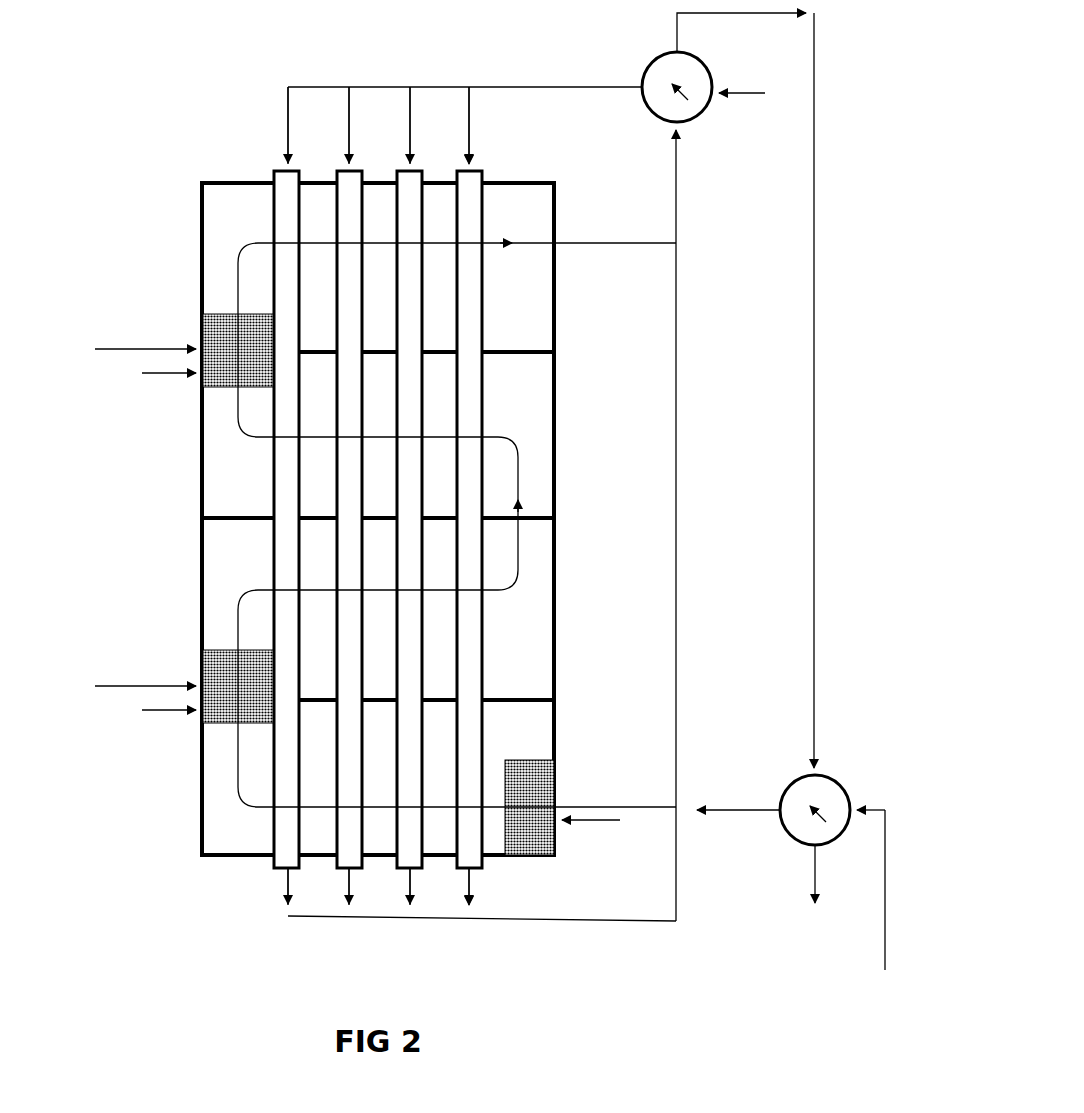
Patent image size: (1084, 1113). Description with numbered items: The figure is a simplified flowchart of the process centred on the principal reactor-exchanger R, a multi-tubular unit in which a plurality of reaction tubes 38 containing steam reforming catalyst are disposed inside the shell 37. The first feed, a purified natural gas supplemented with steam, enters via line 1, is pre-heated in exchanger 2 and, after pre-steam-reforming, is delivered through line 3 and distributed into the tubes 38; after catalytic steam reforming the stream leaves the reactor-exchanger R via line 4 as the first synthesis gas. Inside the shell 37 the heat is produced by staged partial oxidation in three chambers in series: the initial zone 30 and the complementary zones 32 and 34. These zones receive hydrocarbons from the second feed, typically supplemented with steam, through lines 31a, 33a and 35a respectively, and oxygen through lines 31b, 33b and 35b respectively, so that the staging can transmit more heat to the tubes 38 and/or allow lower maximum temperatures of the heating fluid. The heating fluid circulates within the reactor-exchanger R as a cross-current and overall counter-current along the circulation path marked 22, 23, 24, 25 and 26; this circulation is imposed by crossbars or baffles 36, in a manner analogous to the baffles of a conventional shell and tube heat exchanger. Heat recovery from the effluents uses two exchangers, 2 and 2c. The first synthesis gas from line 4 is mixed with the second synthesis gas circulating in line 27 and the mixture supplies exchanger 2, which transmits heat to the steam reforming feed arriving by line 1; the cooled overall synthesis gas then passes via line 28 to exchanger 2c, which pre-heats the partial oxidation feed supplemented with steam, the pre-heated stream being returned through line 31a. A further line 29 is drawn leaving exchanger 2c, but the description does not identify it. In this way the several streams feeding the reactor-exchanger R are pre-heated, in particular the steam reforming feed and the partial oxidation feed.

The reactor-exchanger R is at (210, 94).
The line 1 is at (745, 95).
The exchanger 2 is at (642, 72).
The exchanger 2c is at (838, 782).
The line 3 is at (507, 88).
The line 4 is at (600, 923).
The circulation line 22 is at (238, 768).
The circulation line 23 is at (237, 602).
The circulation line 24 is at (518, 557).
The circulation line 25 is at (238, 422).
The circulation line 26 is at (237, 262).
The line 27 is at (606, 242).
The line 28 is at (733, 15).
The product outlet line 29 is at (812, 867).
The initial zone 30 is at (530, 788).
The line 31a is at (745, 808).
The line 31b is at (595, 843).
The complementary zone 32 is at (213, 673).
The line 33a is at (118, 688).
The line 33b is at (155, 712).
The complementary zone 34 is at (213, 326).
The line 35a is at (118, 350).
The line 35b is at (155, 375).
The crossbars or baffles 36 is at (522, 698).
The shell 37 is at (557, 451).
The reaction tubes 38 is at (335, 217).